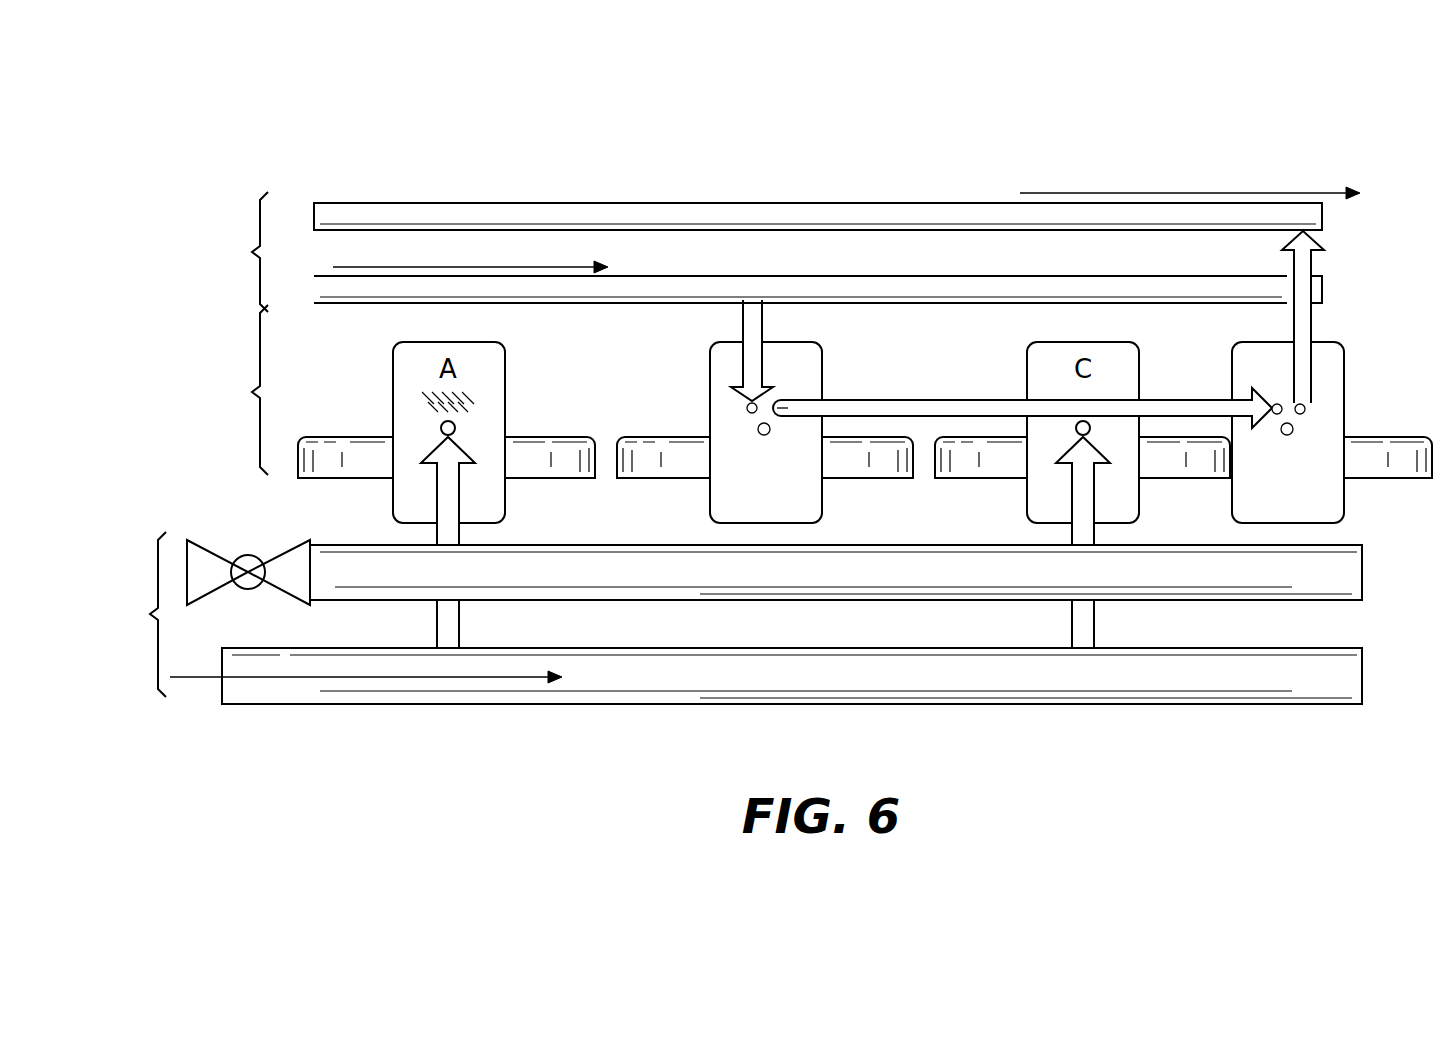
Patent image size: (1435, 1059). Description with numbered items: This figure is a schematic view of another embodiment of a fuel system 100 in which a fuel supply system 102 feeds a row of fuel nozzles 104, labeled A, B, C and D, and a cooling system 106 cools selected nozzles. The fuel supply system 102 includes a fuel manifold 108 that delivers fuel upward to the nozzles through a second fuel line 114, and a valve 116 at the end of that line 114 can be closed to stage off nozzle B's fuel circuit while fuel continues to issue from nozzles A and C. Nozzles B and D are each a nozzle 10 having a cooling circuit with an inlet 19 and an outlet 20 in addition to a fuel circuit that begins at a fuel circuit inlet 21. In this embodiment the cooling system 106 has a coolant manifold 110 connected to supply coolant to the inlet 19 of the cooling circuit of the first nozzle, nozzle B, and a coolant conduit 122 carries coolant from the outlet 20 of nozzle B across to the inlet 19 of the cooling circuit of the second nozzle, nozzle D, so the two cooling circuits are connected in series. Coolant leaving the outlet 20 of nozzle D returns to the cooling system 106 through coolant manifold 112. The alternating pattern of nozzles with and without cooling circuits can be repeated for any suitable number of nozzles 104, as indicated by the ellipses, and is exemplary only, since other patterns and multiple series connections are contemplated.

The fuel system 100 is at (251, 181).
The fuel supply system 102 is at (131, 614).
The fuel nozzles 104 is at (233, 390).
The cooling system 106 is at (233, 252).
The fuel manifold 108 is at (606, 683).
The coolant manifold 110 is at (812, 292).
The coolant manifold 112 is at (740, 220).
The distribution conduit 114 is at (540, 566).
The valve 116 is at (252, 556).
The coolant conduit 122 is at (889, 398).
The nozzle 10 is at (646, 404).
The inlet 19 is at (749, 403).
The outlet 20 is at (790, 409).
The fuel circuit inlet 21 is at (770, 434).